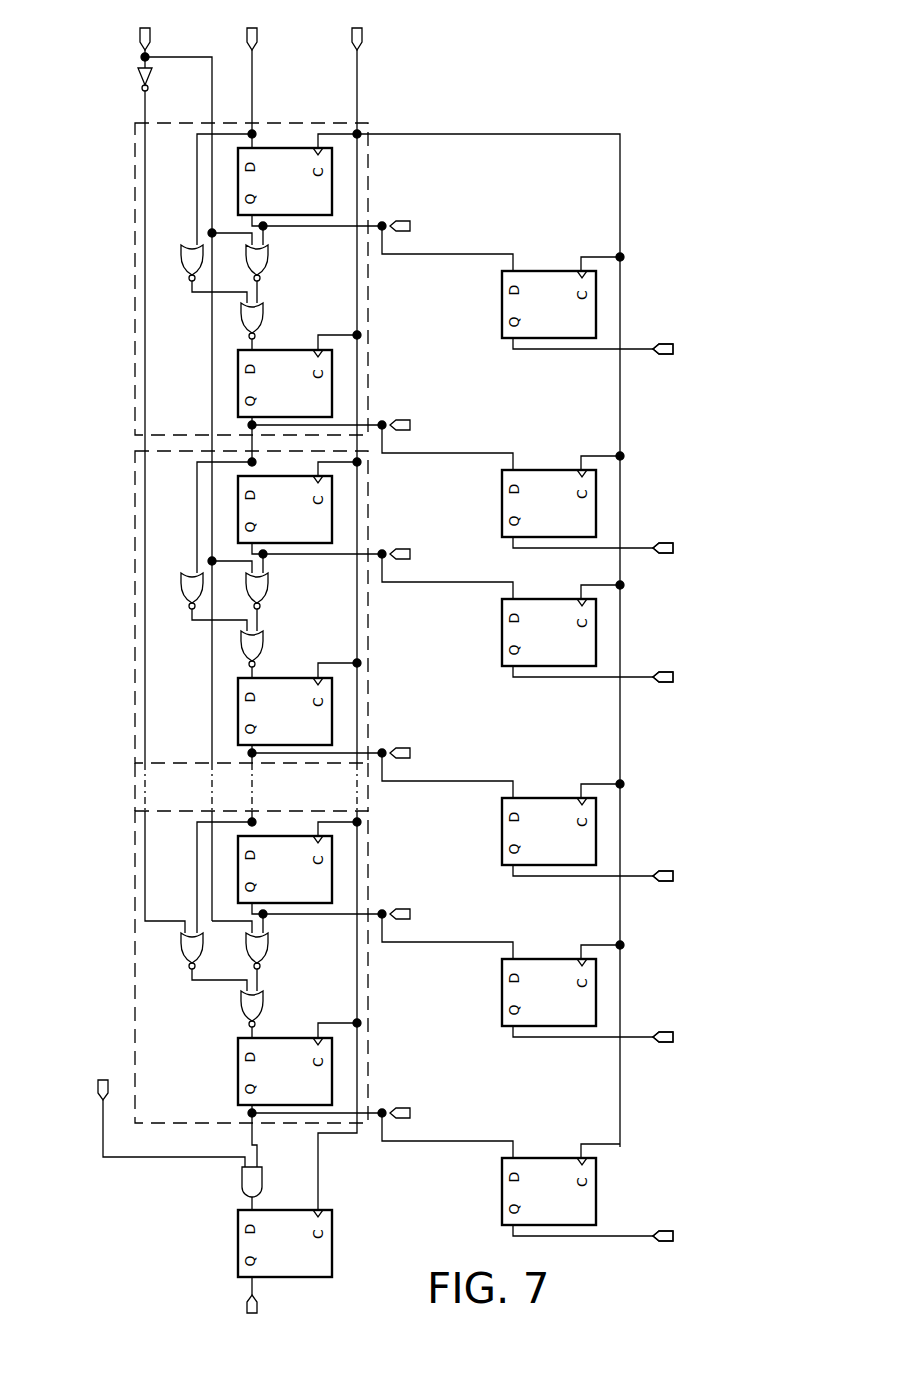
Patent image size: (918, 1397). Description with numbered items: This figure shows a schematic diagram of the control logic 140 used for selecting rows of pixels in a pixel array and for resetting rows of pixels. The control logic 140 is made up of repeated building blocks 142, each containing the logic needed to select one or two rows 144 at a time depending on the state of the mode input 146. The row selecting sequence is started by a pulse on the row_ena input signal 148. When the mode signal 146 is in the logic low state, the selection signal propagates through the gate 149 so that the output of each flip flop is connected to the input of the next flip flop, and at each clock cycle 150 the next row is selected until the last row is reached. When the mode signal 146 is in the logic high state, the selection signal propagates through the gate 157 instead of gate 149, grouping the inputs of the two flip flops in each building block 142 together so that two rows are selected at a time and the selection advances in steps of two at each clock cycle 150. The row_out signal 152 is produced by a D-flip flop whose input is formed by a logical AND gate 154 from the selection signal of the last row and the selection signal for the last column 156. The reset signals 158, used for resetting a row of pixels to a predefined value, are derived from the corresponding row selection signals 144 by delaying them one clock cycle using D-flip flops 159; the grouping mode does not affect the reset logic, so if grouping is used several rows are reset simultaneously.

The control logic 140 is at (141, 1306).
The building block 142 is at (135, 840).
The row 144 is at (407, 222).
The mode input 146 is at (138, 40).
The row_ena input signal 148 is at (258, 40).
The gate 149 is at (264, 266).
The clock cycle 150 is at (363, 40).
The row_out signal 152 is at (262, 1305).
The AND gate 154 is at (243, 1203).
The selection signal for the last column 156 is at (97, 1090).
The gate 157 is at (175, 255).
The reset signal 158 is at (670, 345).
The D-flip flop 159 is at (560, 350).